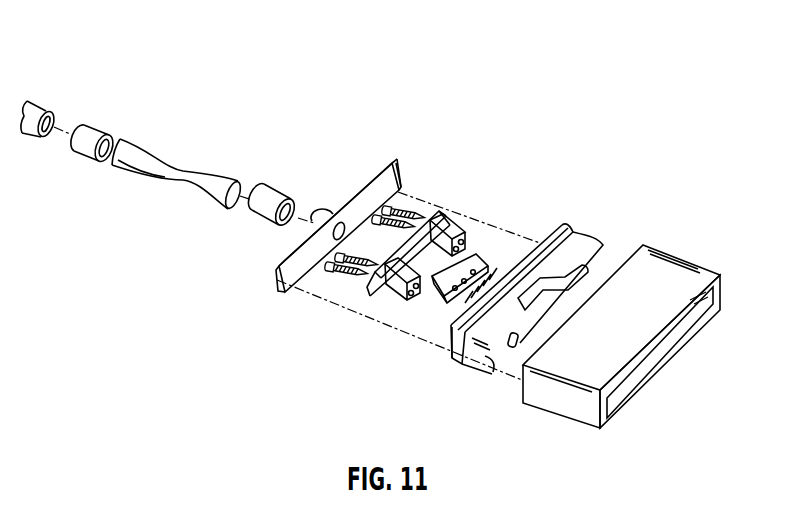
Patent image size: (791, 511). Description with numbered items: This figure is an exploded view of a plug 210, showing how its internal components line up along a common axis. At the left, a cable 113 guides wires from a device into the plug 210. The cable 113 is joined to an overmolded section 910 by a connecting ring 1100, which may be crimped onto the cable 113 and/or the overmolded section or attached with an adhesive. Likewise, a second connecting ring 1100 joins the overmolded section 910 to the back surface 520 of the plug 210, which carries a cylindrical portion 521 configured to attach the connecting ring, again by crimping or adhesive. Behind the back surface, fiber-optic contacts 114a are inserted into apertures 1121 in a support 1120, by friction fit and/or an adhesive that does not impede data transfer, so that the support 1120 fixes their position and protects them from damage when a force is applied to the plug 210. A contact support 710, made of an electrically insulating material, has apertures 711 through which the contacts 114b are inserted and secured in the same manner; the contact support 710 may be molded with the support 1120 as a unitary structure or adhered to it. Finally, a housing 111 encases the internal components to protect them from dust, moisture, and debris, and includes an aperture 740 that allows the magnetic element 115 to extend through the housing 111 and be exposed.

The plug 210 is at (652, 108).
The cable 113 is at (33, 113).
The connecting ring 1100 is at (97, 128).
The overmolded section 910 is at (182, 174).
The back surface 520 is at (395, 160).
The cylindrical portion 521 is at (312, 219).
The fiber-optic contacts 114a is at (400, 193).
The contacts 114b is at (450, 335).
The support 1120 is at (460, 222).
The apertures 1121 is at (400, 300).
The contact support 710 is at (483, 255).
The apertures 711 is at (477, 294).
The magnetic element 115 is at (492, 366).
The housing 111 is at (686, 256).
The aperture 740 is at (653, 358).